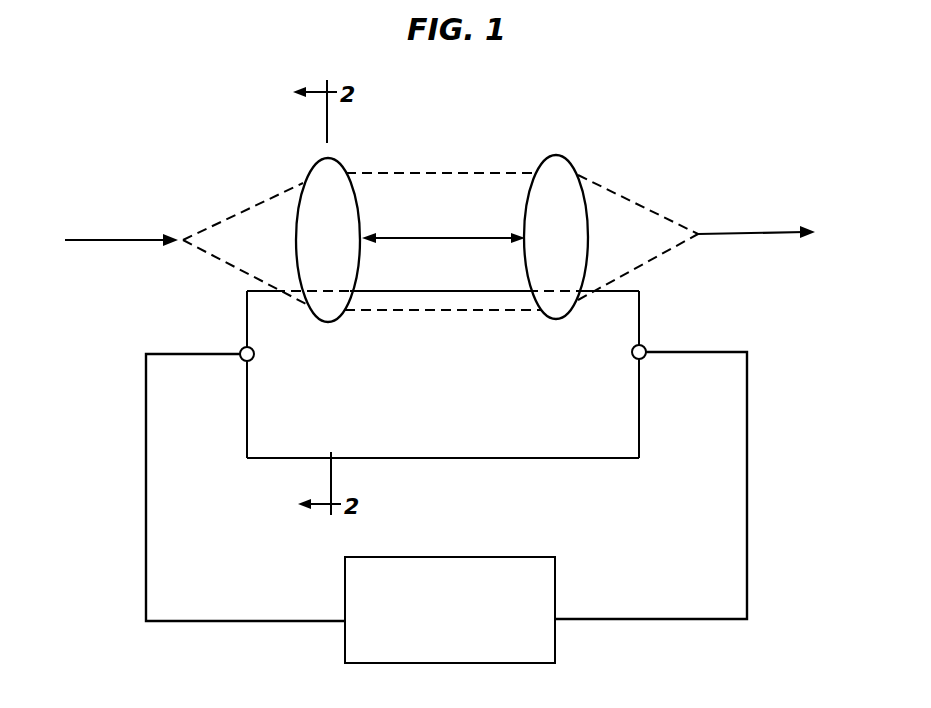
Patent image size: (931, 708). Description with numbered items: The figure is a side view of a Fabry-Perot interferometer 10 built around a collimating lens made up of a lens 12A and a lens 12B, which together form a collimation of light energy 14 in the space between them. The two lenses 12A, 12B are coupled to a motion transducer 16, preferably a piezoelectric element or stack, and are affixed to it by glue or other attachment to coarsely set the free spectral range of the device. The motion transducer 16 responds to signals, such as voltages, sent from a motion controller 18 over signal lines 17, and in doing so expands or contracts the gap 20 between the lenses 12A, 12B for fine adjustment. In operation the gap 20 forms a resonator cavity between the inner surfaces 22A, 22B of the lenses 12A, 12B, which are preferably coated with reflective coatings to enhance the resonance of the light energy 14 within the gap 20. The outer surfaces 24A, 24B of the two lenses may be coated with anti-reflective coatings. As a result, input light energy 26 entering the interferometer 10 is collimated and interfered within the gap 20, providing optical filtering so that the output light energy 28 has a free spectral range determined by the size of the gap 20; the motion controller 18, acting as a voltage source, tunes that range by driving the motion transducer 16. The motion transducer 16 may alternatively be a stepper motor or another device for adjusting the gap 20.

The interferometer 10 is at (758, 94).
The lens 12A is at (322, 223).
The lens 12B is at (550, 204).
The light energy 14 is at (437, 172).
The motion transducer 16 is at (435, 437).
The signal lines 17 is at (146, 578).
The motion controller 18 is at (438, 649).
The gap 20 is at (455, 250).
The surface 22A is at (361, 222).
The surface 22B is at (526, 222).
The surface 24A is at (298, 276).
The surface 24B is at (587, 216).
The input light energy 26 is at (105, 240).
The output light energy 28 is at (768, 232).